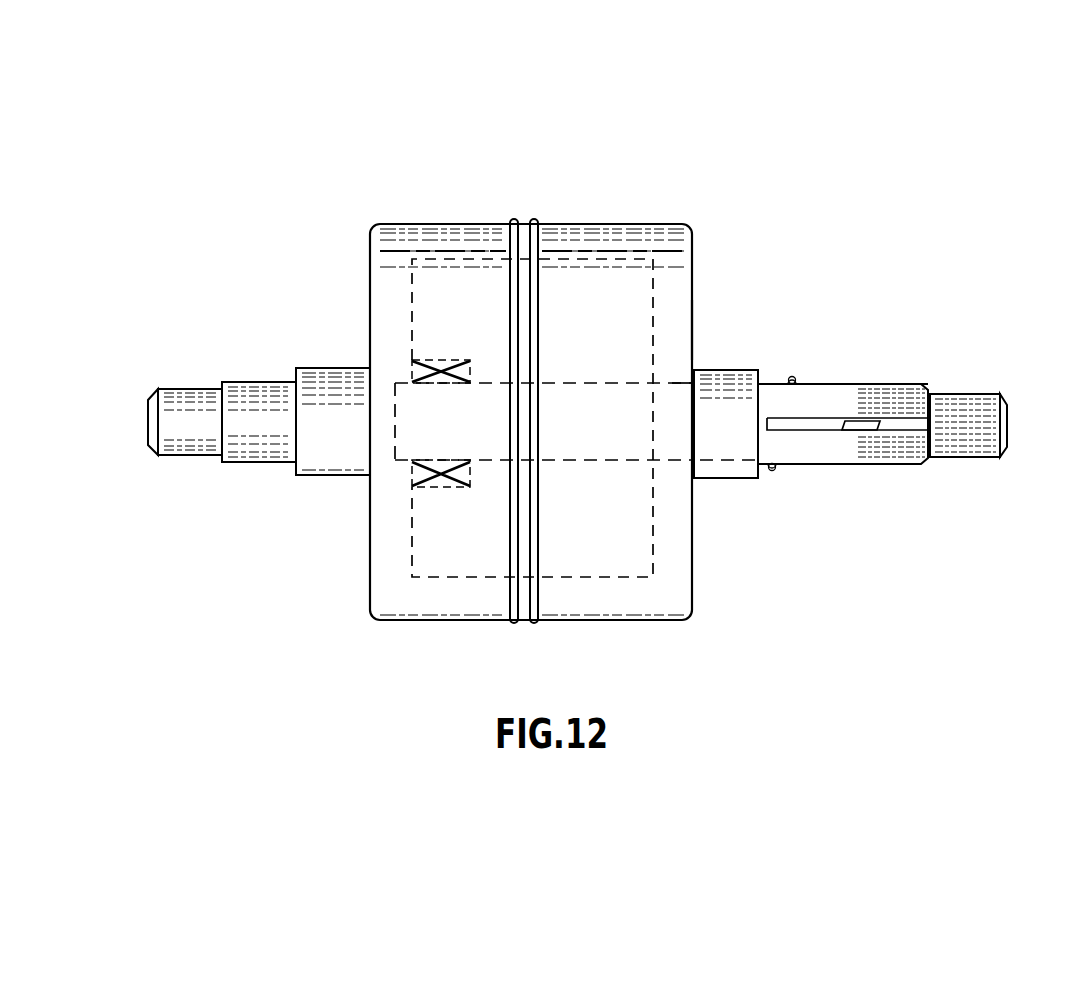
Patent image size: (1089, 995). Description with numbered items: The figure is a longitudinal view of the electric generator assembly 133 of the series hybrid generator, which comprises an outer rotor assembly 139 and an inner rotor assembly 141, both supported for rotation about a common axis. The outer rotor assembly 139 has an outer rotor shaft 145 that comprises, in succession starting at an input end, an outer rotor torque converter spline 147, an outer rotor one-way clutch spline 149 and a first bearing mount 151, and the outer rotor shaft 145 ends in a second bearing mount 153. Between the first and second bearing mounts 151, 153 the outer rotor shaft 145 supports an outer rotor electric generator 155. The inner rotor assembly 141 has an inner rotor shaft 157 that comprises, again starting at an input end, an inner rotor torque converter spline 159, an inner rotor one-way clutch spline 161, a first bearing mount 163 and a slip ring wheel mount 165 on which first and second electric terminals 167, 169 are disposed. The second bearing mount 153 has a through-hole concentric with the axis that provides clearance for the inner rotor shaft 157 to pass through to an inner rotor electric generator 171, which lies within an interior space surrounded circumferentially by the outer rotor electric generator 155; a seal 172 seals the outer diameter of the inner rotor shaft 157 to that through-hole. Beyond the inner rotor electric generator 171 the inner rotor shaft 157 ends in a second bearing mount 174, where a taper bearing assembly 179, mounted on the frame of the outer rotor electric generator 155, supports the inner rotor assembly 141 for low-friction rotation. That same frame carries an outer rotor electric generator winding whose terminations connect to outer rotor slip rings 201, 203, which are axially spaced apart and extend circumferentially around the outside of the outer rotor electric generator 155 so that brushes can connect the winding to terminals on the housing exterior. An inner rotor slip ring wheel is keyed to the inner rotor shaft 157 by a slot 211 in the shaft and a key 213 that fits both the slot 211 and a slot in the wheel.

The electric generator assembly 133 is at (766, 141).
The outer rotor assembly 139 is at (364, 624).
The inner rotor assembly 141 is at (926, 478).
The outer rotor shaft 145 is at (152, 456).
The outer rotor torque converter spline 147 is at (194, 388).
The outer rotor one-way clutch spline 149 is at (262, 380).
The first bearing mount 151 is at (336, 368).
The second bearing mount 153 is at (724, 366).
The outer rotor electric generator 155 is at (693, 290).
The inner rotor shaft 157 is at (1003, 457).
The inner rotor torque converter spline 159 is at (966, 393).
The inner rotor one-way clutch spline 161 is at (893, 381).
The first bearing mount 163 is at (840, 466).
The slip ring wheel mount 165 is at (797, 466).
The first electric terminal 167 is at (792, 376).
The second electric terminal 169 is at (771, 470).
The inner rotor electric generator 171 is at (468, 586).
The seal 172 is at (766, 382).
The second bearing mount 174 is at (447, 421).
The taper bearing assembly 179 is at (445, 490).
The outer rotor slip ring 201 is at (510, 212).
The outer rotor slip ring 203 is at (537, 212).
The slot 211 is at (814, 425).
The key 213 is at (874, 432).